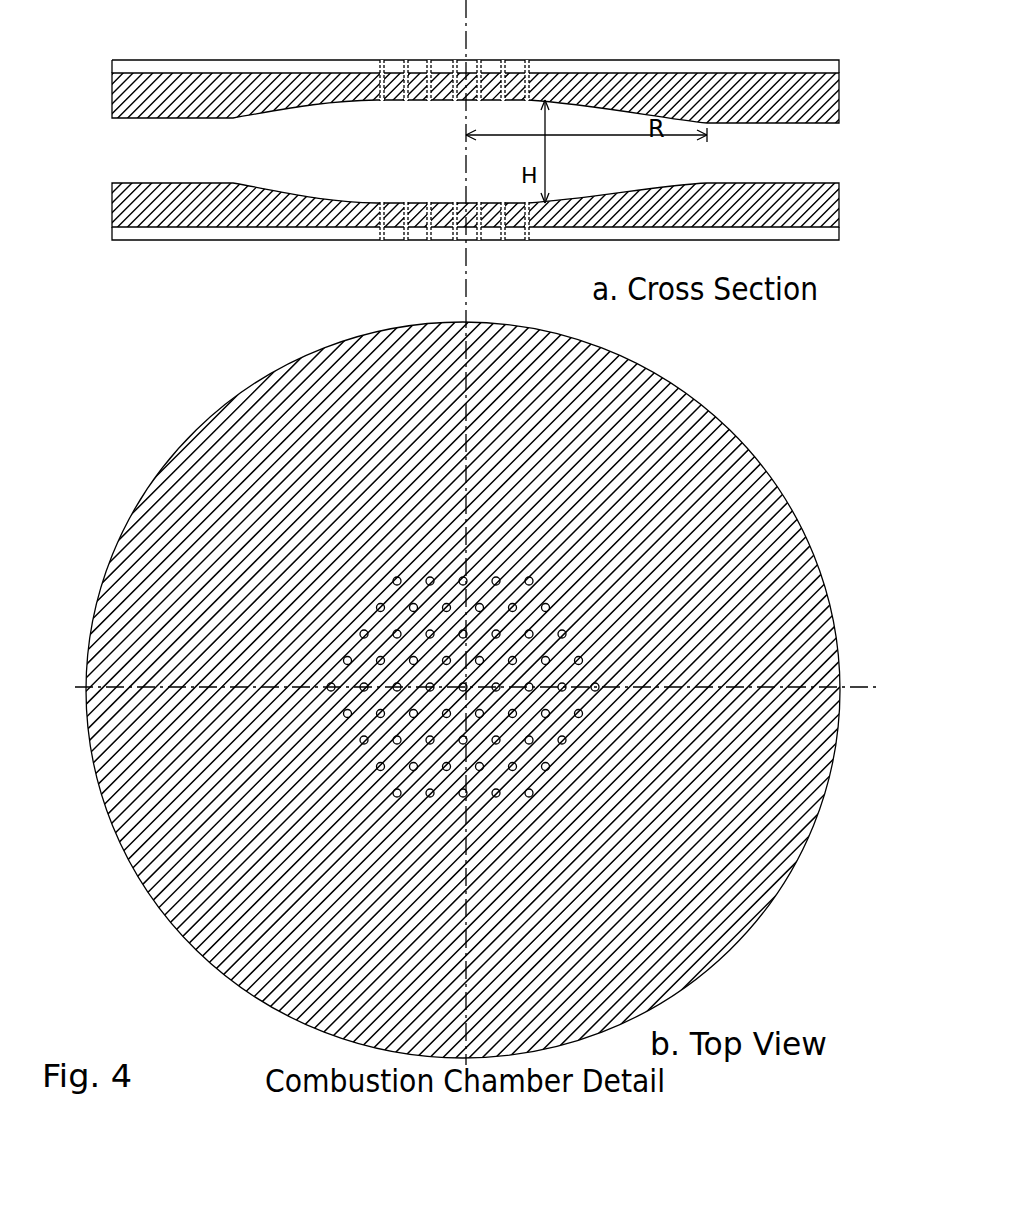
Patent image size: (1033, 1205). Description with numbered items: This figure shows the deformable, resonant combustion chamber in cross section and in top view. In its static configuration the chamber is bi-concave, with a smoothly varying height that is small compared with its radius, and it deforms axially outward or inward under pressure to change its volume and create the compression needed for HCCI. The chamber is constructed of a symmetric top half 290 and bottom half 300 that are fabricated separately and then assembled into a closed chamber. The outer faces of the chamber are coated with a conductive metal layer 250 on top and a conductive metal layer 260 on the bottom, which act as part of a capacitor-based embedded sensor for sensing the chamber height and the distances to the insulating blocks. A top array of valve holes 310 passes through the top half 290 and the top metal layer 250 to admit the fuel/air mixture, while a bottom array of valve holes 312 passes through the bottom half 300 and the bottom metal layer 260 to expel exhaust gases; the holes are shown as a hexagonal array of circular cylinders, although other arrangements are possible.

The top conductive metal layer 250 is at (588, 72).
The bottom conductive metal layer 260 is at (327, 237).
The top half of combustion chamber 290 is at (158, 80).
The bottom half of combustion chamber 300 is at (220, 228).
The top array of valve holes 310 is at (405, 65).
The bottom array of valve holes 312 is at (408, 204).